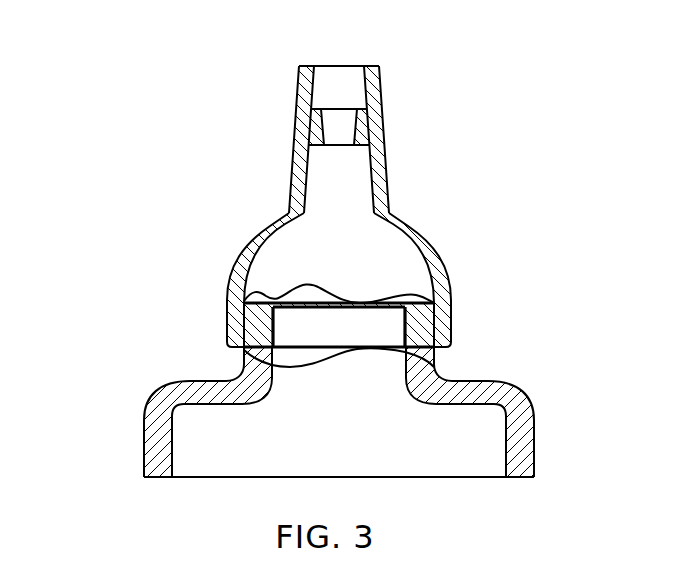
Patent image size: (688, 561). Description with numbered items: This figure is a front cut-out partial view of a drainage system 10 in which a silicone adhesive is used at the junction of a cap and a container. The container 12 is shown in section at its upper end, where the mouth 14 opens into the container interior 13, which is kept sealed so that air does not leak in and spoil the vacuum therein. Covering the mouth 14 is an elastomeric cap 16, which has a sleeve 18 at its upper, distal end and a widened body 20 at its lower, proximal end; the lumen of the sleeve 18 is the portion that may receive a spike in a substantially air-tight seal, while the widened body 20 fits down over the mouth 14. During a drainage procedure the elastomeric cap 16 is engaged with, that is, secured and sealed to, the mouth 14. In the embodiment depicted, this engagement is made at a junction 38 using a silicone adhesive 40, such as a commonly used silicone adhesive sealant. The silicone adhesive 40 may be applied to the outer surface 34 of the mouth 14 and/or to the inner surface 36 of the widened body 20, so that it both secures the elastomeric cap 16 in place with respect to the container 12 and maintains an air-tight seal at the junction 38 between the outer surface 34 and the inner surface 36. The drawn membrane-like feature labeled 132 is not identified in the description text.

The drainage system 10 is at (181, 127).
The container 12 is at (303, 436).
The container interior 13 is at (415, 447).
The mouth 14 is at (330, 358).
The elastomeric cap 16 is at (373, 206).
The sleeve 18 is at (308, 123).
The widened body 20 is at (258, 236).
The outer surface 34 is at (454, 363).
The inner surface 36 is at (410, 273).
The junction 38 is at (479, 269).
The silicone adhesive 40 is at (384, 325).
The upper membrane 132 is at (290, 303).